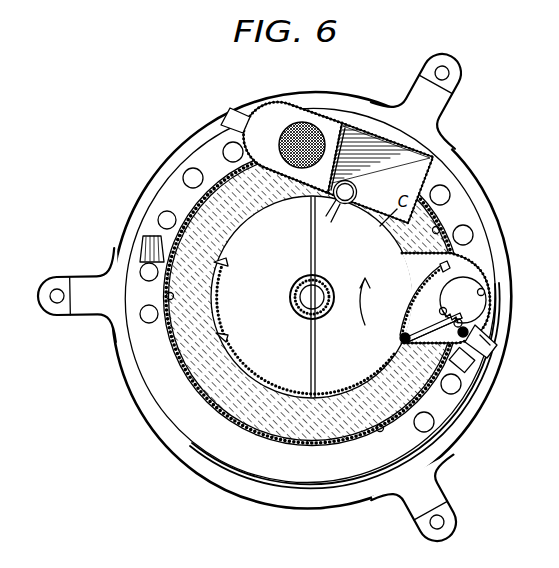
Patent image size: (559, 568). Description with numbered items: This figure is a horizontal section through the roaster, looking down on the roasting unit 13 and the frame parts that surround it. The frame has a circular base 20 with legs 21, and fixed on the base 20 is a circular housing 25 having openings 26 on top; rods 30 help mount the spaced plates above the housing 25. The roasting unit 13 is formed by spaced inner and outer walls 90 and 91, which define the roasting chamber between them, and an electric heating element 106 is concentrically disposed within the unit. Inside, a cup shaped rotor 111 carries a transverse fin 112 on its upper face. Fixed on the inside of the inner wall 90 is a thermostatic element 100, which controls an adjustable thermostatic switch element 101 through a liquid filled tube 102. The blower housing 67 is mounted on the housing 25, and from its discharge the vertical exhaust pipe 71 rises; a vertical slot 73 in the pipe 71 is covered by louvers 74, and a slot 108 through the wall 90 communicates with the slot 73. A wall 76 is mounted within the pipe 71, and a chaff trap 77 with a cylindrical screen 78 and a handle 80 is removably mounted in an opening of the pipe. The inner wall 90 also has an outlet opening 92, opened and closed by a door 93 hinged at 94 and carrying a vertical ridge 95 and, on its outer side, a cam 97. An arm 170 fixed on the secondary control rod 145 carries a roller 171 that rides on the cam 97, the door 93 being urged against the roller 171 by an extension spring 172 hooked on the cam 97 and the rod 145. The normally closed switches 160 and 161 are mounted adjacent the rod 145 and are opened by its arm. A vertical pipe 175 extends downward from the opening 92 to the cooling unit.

The roasting unit 13 is at (209, 379).
The circular base 20 is at (132, 366).
The legs 21 is at (95, 306).
The circular housing 25 is at (447, 411).
The openings 26 is at (188, 176).
The rods 30 is at (168, 296).
The blower housing 67 is at (233, 452).
The vertical exhaust pipe 71 is at (404, 148).
The vertical slot 73 is at (355, 200).
The louvers 74 is at (360, 207).
The wall 76 is at (340, 126).
The chaff trap 77 is at (262, 122).
The cylindrical screen 78 is at (304, 128).
The handle 80 is at (234, 108).
The inner wall 90 is at (250, 380).
The outer wall 91 is at (234, 413).
The outlet opening 92 is at (400, 265).
The door 93 is at (440, 274).
The hinge 94 is at (400, 338).
The ridge 95 is at (440, 265).
The cam 97 is at (463, 300).
The thermostatic element 100 is at (218, 292).
The adjustable thermostatic switch element 101 is at (168, 236).
The liquid filled tube 102 is at (222, 263).
The electric heating element 106 is at (290, 300).
The slot 108 is at (338, 210).
The cup shaped rotor 111 is at (260, 248).
The transverse fin 112 is at (311, 328).
The secondary control rod 145 is at (400, 344).
The switch 160 is at (490, 351).
The switch 161 is at (472, 362).
The arm 170 is at (445, 332).
The roller 171 is at (438, 335).
The extension spring 172 is at (450, 317).
The vertical pipe 175 is at (484, 292).